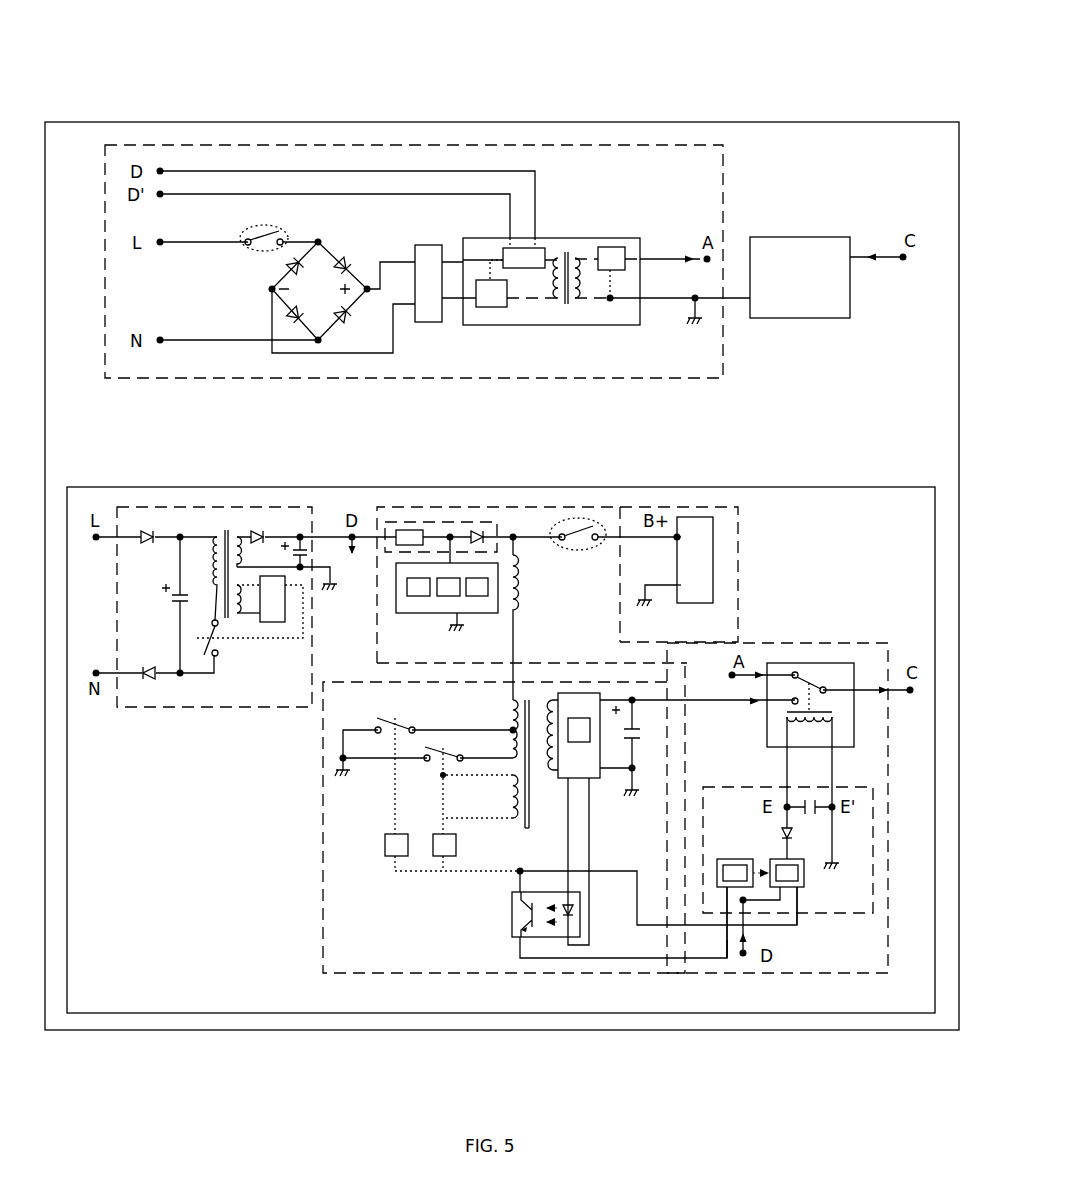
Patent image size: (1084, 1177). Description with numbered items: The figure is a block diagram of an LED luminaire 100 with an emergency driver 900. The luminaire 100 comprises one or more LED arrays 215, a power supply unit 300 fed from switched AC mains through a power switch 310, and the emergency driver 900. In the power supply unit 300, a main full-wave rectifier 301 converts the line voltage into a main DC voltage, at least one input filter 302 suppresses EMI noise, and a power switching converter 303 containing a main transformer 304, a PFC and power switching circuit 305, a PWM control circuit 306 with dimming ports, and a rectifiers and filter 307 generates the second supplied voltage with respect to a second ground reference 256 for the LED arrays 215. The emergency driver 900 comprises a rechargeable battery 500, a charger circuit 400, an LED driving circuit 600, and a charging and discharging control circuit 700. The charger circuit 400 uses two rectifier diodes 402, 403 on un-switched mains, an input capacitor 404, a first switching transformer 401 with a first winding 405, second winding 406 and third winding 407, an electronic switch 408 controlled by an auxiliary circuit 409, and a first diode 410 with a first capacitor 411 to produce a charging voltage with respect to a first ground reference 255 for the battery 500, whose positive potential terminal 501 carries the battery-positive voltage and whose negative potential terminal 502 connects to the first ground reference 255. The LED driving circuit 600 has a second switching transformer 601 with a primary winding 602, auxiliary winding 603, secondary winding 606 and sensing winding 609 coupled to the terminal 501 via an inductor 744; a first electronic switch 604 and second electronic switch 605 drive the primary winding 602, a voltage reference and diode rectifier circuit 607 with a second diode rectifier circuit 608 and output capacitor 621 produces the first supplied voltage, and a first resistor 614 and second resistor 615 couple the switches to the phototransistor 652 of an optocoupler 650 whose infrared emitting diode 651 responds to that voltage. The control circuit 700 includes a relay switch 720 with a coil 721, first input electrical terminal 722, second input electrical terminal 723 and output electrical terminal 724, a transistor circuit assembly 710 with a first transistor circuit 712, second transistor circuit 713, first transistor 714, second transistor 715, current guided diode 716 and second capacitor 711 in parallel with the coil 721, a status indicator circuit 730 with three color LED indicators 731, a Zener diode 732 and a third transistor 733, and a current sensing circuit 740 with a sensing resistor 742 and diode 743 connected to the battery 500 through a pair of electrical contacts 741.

The LED luminaire 100 is at (431, 118).
The LED arrays 215 is at (800, 236).
The first ground reference 255 is at (334, 594).
The second ground reference 256 is at (700, 324).
The power supply unit 300 is at (500, 141).
The main full-wave rectifier 301 is at (299, 236).
The input filter 302 is at (416, 244).
The power switching converter 303 is at (642, 237).
The main transformer 304 is at (565, 254).
The PFC and power switching circuit 305 is at (487, 308).
The PWM control circuit 306 is at (535, 269).
The rectifiers and filter 307 is at (612, 246).
The power switch 310 is at (266, 250).
The charger circuit 400 is at (183, 710).
The first switching transformer 401 is at (224, 522).
The rectifier diode 402 is at (147, 530).
The rectifier diode 403 is at (148, 680).
The input capacitor 404 is at (178, 601).
The first winding 405 is at (216, 545).
The second winding 406 is at (243, 629).
The third winding 407 is at (239, 545).
The electronic switch 408 is at (220, 657).
The auxiliary circuit 409 is at (274, 624).
The first diode 410 is at (260, 532).
The first capacitor 411 is at (302, 548).
The rechargeable battery 500 is at (716, 582).
The positive potential terminal 501 is at (689, 520).
The negative potential terminal 502 is at (678, 590).
The LED driving circuit 600 is at (478, 979).
The second switching transformer 601 is at (521, 830).
The primary winding 602 is at (511, 750).
The auxiliary winding 603 is at (511, 800).
The first electronic switch 604 is at (395, 731).
The second electronic switch 605 is at (441, 757).
The secondary winding 606 is at (541, 700).
The voltage reference and diode rectifier circuit 607 is at (601, 779).
The second diode rectifier circuit 608 is at (560, 760).
The sensing winding 609 is at (511, 720).
The first resistor 614 is at (392, 858).
The second resistor 615 is at (438, 858).
The output capacitor 621 is at (638, 731).
The optocoupler 650 is at (550, 940).
The infrared emitting diode 651 is at (586, 936).
The phototransistor 652 is at (526, 912).
The charging and discharging control circuit 700 is at (822, 979).
The transistor circuit assembly 710 is at (818, 916).
The second capacitor 711 is at (836, 821).
The first transistor circuit 712 is at (750, 858).
The second transistor circuit 713 is at (805, 882).
The first transistor 714 is at (722, 892).
The second transistor 715 is at (775, 856).
The current guided diode 716 is at (793, 836).
The relay switch 720 is at (858, 719).
The coil 721 is at (800, 722).
The first input electrical terminal 722 is at (797, 671).
The second input electrical terminal 723 is at (792, 703).
The output electrical terminal 724 is at (827, 688).
The status indicator circuit 730 is at (478, 615).
The three color LED indicators 731 is at (418, 597).
The Zener diode 732 is at (454, 615).
The third transistor 733 is at (505, 535).
The current sensing circuit 740 is at (431, 520).
The pair of electrical contacts 741 is at (591, 524).
The sensing resistor 742 is at (406, 529).
The diode 743 is at (479, 529).
The inductor 744 is at (517, 592).
The emergency driver 900 is at (575, 503).